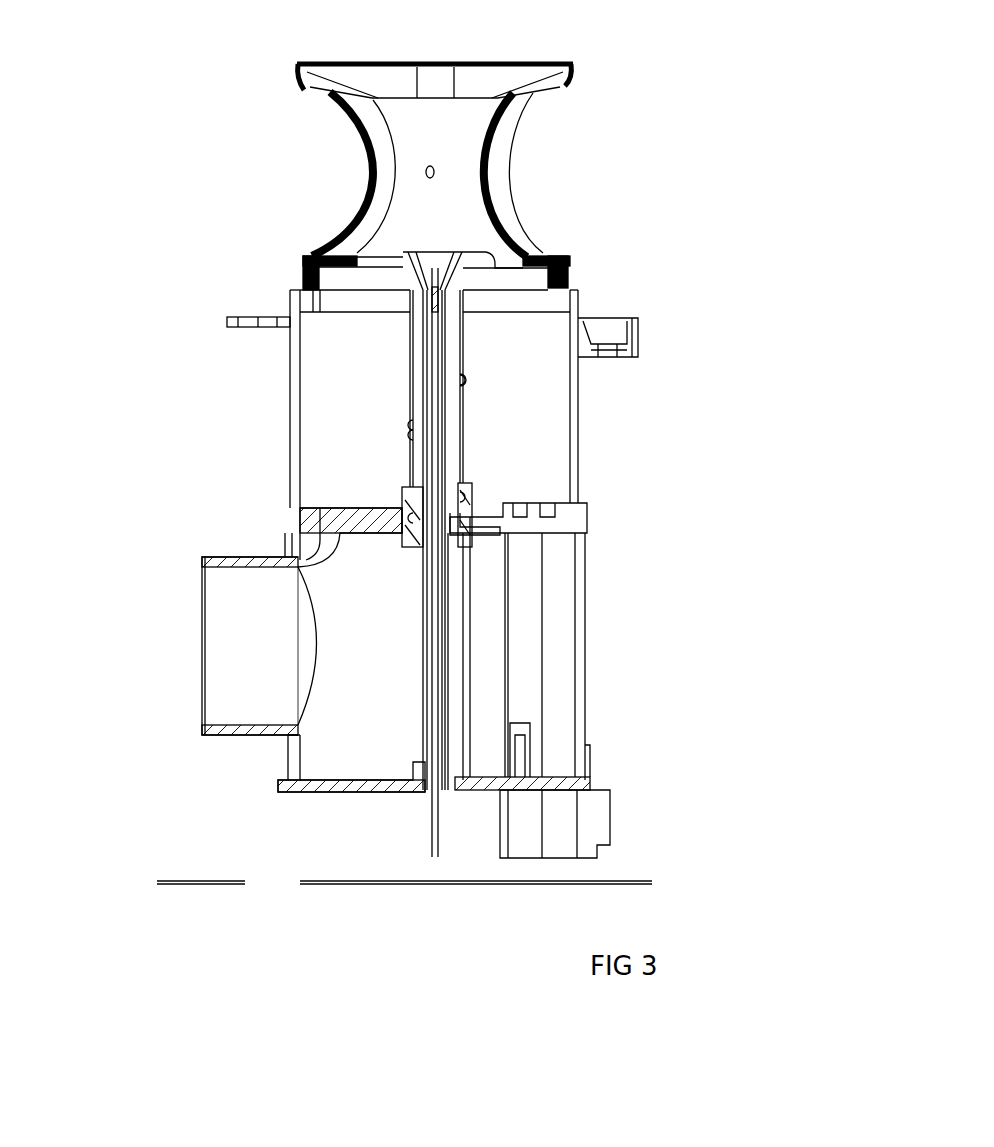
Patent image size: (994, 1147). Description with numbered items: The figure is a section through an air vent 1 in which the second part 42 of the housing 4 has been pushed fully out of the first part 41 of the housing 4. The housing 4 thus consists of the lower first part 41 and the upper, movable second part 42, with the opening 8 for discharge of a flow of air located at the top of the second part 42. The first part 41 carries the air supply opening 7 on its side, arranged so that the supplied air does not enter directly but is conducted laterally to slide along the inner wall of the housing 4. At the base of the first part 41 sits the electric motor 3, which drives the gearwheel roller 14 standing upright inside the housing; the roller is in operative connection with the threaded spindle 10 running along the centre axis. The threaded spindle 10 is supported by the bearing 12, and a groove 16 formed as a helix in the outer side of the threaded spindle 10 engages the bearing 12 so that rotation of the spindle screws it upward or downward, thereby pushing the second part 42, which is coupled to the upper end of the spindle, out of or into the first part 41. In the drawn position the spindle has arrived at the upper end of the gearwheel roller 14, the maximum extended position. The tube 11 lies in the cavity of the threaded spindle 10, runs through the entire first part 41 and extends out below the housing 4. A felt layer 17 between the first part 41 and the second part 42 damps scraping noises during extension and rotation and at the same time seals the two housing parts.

The air vent 1 is at (272, 130).
The second part of the housing 42 is at (572, 75).
The opening for discharge of a flow of air 8 is at (532, 173).
The felt layer 17 is at (303, 288).
The housing 4 is at (664, 329).
The groove 16 is at (456, 380).
The threaded spindle 10 is at (455, 452).
The bearing 12 is at (415, 545).
The first part of the housing 41 is at (588, 503).
The gearwheel roller 14 is at (570, 630).
The air supply opening 7 is at (205, 622).
The electric motor 3 is at (583, 820).
The tube 11 is at (442, 810).